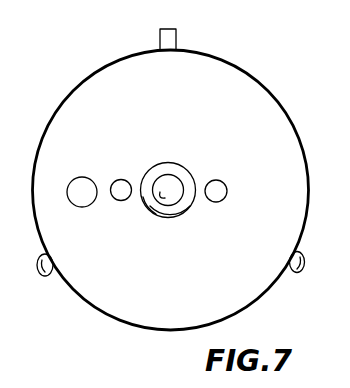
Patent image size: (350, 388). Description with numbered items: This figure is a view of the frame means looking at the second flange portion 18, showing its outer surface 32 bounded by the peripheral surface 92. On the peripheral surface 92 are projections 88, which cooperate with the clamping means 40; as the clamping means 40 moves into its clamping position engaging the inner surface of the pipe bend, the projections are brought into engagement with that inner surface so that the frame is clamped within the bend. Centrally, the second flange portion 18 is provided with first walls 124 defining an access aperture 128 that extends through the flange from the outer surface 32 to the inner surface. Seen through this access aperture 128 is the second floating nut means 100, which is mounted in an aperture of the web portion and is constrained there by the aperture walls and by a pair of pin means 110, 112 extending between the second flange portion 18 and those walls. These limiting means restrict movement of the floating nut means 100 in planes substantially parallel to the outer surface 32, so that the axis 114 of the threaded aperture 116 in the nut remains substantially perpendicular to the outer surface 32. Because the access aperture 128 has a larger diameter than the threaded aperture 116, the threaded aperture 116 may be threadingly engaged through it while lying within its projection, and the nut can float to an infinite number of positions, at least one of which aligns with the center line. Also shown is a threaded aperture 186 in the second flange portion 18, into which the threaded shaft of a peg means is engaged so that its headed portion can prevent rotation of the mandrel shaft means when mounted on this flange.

The second flange portion 18 is at (284, 190).
The outer surface 32 is at (265, 273).
The clamping means 40 is at (176, 36).
The projections 88 is at (44, 276).
The peripheral surface 92 is at (303, 143).
The second floating nut means 100 is at (178, 171).
The pin means 110 is at (124, 179).
The pin means 112 is at (224, 200).
The axis 114 is at (170, 192).
The threaded aperture 116 is at (151, 208).
The first walls 124 is at (168, 162).
The aperture 128 is at (174, 212).
The threaded aperture 186 is at (81, 207).